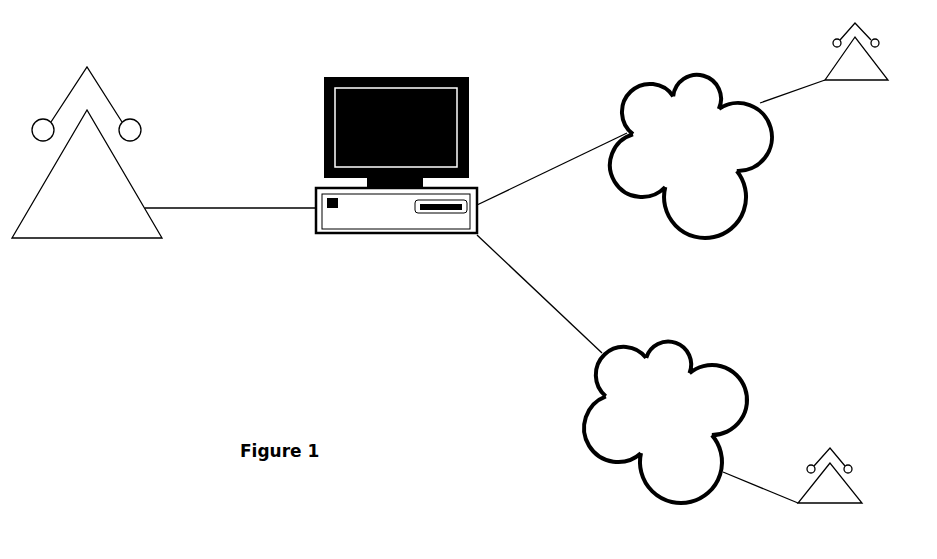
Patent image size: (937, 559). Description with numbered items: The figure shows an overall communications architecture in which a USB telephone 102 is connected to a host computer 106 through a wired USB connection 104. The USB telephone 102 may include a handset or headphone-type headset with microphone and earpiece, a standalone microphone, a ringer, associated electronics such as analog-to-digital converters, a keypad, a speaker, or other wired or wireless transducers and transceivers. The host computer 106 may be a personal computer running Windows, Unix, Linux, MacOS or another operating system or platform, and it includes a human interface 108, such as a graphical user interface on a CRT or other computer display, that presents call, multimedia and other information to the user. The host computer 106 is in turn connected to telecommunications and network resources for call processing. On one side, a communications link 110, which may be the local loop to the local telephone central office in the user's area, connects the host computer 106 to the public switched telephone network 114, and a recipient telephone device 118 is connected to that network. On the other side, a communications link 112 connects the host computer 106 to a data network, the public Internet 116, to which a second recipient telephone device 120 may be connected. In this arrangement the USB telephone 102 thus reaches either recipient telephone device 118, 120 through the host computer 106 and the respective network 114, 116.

The USB telephone 102 is at (87, 167).
The USB connection 104 is at (230, 211).
The host computer 106 is at (396, 222).
The human interface 108 is at (447, 88).
The communications link 110 is at (552, 169).
The communications link 112 is at (539, 294).
The public switched telephone network 114 is at (691, 165).
The public Internet 116 is at (665, 422).
The recipient telephone device 118 is at (826, 63).
The recipient telephone device 120 is at (792, 485).